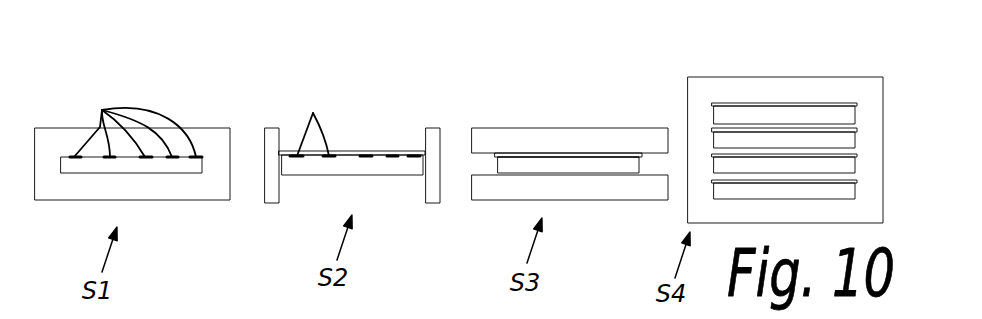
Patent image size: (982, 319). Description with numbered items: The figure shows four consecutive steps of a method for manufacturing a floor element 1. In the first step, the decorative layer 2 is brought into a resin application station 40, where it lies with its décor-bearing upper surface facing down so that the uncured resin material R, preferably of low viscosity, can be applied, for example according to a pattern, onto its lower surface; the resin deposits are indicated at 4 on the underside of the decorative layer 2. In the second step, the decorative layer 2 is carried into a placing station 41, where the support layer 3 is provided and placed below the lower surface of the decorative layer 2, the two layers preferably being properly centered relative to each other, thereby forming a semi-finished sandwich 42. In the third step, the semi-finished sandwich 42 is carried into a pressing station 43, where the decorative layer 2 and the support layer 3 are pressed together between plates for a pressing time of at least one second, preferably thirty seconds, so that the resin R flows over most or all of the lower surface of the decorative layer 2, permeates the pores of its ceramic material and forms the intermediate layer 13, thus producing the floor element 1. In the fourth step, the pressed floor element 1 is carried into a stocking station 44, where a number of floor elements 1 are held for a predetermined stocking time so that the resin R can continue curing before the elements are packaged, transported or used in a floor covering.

The floor element 1 is at (621, 140).
The decorative layer 2 is at (187, 173).
The support layer 3 is at (370, 151).
The electrodes (pads) 4 is at (92, 173).
The intermediate layer 13 is at (525, 157).
The resin application station 40 is at (210, 128).
The placing station 41 is at (430, 202).
The semi-finished sandwich 42 is at (407, 130).
The pressing station 43 is at (538, 128).
The stocking station 44 is at (748, 77).